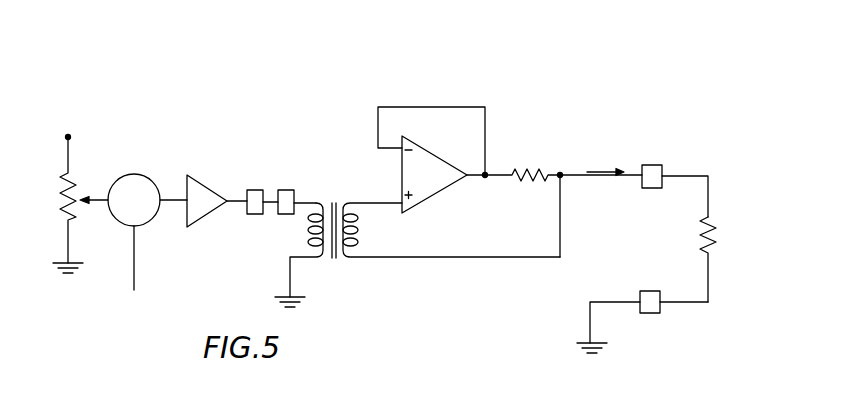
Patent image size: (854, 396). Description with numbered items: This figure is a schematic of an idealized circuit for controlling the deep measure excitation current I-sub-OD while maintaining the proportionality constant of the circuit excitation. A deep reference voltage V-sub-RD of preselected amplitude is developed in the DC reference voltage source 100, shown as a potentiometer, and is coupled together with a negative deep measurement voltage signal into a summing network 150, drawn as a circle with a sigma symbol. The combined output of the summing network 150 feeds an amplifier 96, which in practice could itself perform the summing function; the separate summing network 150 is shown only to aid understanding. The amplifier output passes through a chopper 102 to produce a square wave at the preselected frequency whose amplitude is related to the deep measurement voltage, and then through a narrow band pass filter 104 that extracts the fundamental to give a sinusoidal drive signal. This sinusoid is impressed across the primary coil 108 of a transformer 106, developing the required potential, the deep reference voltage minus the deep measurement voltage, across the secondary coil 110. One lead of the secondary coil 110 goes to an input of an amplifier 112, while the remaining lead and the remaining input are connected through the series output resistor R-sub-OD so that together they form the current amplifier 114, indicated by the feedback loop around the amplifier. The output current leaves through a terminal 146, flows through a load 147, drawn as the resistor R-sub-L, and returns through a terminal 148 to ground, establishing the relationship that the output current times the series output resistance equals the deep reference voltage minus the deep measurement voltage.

The amplifier 96 is at (208, 178).
The DC reference voltage source 100 is at (121, 130).
The chopper 102 is at (257, 190).
The narrow band pass filter 104 is at (287, 190).
The transformer 106 is at (399, 229).
The primary coil 108 is at (308, 241).
The secondary coil 110 is at (357, 246).
The amplifier 112 is at (438, 164).
The current amplifier 114 is at (488, 92).
The terminal 146 is at (658, 165).
The load resistor 147 is at (702, 235).
The terminal 148 is at (655, 313).
The summing network 150 is at (141, 172).